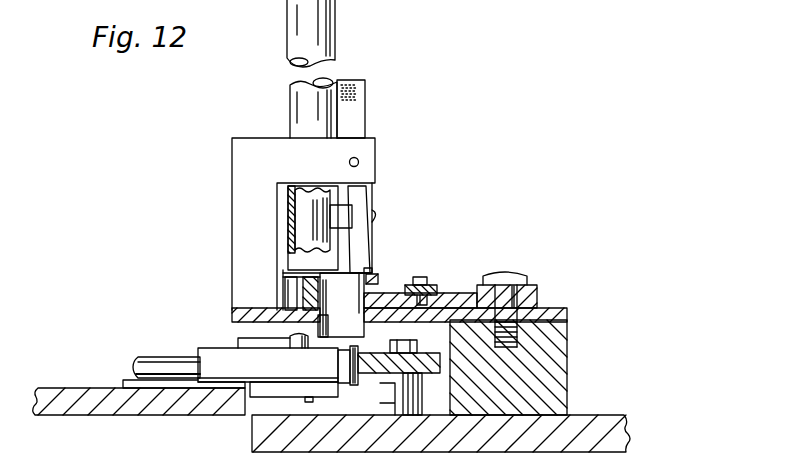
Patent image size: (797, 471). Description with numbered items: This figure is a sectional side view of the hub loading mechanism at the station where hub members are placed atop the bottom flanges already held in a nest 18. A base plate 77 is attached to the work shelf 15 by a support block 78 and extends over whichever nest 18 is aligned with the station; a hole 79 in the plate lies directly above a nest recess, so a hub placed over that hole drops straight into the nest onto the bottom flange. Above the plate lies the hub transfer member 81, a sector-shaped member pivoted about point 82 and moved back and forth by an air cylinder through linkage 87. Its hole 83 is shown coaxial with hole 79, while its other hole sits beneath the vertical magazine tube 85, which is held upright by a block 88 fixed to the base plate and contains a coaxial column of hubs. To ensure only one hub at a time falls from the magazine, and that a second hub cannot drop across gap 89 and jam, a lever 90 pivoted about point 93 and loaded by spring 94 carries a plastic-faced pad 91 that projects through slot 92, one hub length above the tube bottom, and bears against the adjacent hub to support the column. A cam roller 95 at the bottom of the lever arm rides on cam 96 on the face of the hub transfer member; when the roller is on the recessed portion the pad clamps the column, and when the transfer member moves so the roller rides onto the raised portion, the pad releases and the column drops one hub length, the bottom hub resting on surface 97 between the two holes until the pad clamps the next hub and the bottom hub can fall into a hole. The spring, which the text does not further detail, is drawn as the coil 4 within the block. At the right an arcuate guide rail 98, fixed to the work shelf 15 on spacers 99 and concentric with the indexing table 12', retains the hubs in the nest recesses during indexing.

The magazine tube 85 is at (335, 19).
The spring 94 is at (351, 82).
The lever 90 is at (365, 110).
The block 88 is at (242, 154).
The pivot point 93 is at (359, 162).
The plastic-faced pad 91 is at (350, 214).
The coil spring 4 is at (303, 218).
The slot 92 is at (337, 233).
The cam roller 95 is at (373, 273).
The cam 96 is at (364, 292).
The gap 89 is at (288, 272).
The surface 97 is at (284, 286).
The base plate 77 is at (233, 321).
The hole 79 is at (316, 327).
The nest 18 is at (208, 357).
The indexing table 12' is at (139, 389).
The hole 83 is at (347, 303).
The linkage 87 is at (428, 283).
The hub transfer member 81 is at (450, 297).
The pivot point 82 is at (515, 273).
The support block 78 is at (562, 343).
The work shelf 15 is at (587, 420).
The arcuate guide rail 98 is at (418, 370).
The spacers 99 is at (397, 407).